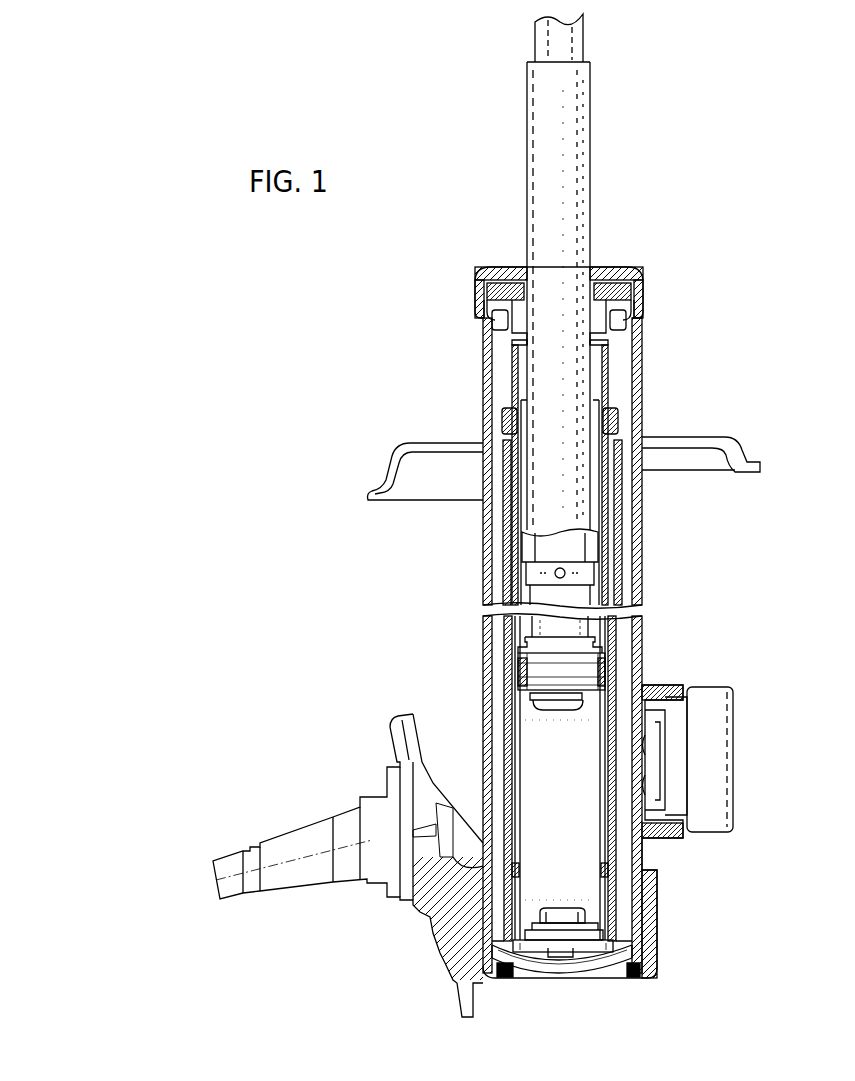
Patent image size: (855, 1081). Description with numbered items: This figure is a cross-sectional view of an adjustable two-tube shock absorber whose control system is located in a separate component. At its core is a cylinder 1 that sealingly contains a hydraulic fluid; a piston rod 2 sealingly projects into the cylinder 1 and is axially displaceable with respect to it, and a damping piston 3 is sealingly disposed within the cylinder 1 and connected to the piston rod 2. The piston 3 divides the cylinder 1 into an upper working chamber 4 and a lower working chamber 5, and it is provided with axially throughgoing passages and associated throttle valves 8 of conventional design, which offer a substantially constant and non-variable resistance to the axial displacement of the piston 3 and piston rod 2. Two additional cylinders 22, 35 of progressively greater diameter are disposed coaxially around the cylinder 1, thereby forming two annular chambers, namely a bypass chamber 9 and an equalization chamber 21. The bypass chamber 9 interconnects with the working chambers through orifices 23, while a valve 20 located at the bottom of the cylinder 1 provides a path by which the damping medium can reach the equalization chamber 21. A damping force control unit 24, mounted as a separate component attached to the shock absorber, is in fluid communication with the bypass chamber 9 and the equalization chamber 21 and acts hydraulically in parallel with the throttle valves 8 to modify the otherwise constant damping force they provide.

The cylinder 1 is at (610, 353).
The piston rod 2 is at (572, 226).
The damping piston 3 is at (605, 670).
The upper working chamber 4 is at (605, 508).
The lower working chamber 5 is at (595, 853).
The throttle valves 8 is at (527, 674).
The bypass chamber 9 is at (612, 580).
The valve 20 is at (570, 953).
The equalization chamber 21 is at (500, 952).
The additional cylinder 22 is at (618, 538).
The orifices 23 is at (515, 437).
The damping force control unit 24 is at (712, 762).
The additional cylinder 35 is at (488, 560).